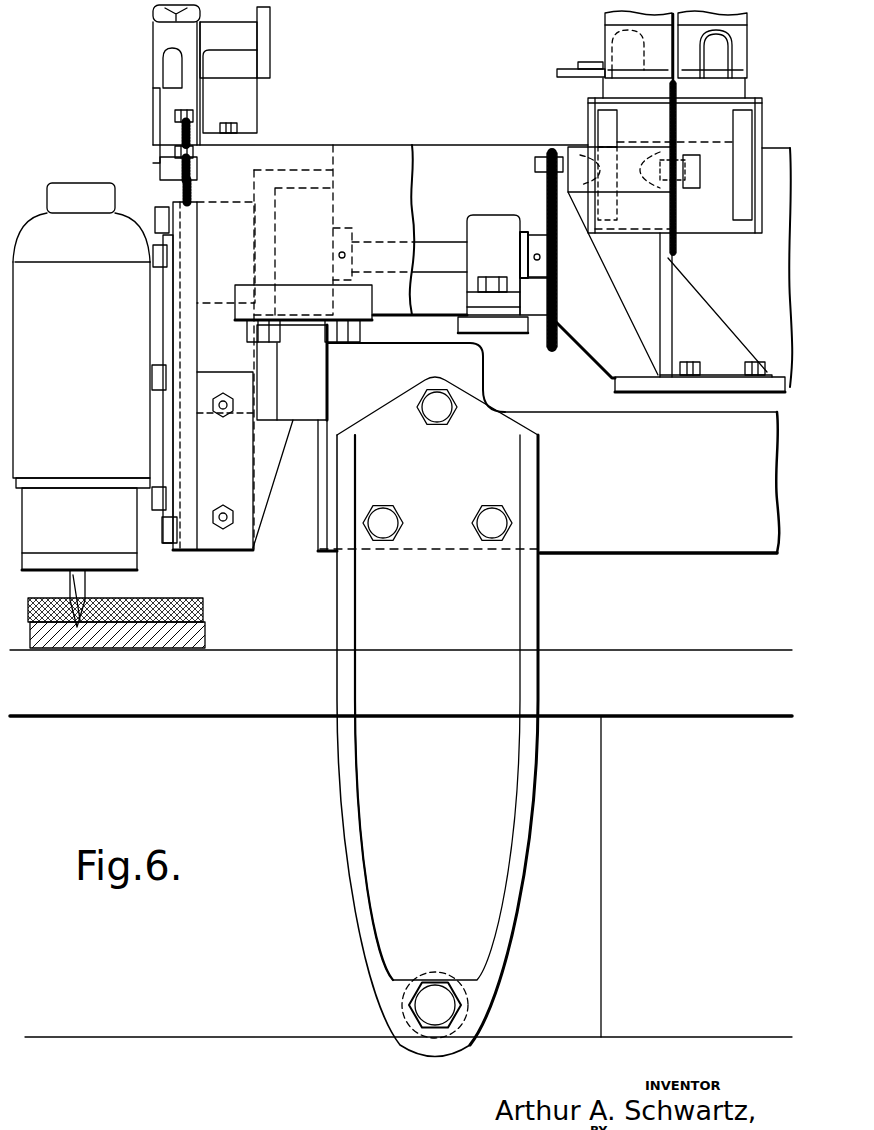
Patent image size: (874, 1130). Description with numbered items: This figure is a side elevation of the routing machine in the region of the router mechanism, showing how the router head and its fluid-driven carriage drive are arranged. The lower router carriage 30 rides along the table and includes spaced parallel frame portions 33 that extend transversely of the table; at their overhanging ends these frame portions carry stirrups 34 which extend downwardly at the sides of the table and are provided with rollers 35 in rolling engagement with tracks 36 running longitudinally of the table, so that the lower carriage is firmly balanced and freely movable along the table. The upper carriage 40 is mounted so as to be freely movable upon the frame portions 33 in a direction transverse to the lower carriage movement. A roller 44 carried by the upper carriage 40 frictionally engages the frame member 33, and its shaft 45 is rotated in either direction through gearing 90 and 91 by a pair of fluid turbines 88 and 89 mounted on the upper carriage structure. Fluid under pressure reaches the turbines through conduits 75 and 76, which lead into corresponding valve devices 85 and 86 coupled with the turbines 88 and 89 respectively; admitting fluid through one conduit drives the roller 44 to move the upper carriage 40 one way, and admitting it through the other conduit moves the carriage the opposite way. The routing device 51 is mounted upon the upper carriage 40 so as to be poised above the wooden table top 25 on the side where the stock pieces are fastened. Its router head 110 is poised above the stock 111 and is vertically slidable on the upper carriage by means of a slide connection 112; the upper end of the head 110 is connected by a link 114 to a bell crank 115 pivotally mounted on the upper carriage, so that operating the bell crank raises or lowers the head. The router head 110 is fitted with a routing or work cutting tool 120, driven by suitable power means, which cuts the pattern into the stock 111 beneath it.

The wooden table top 25 is at (247, 697).
The lower router carriage 30 is at (549, 482).
The frame portions 33 is at (308, 378).
The stirrups 34 is at (375, 765).
The rollers 35 is at (402, 1010).
The tracks 36 is at (283, 1037).
The upper carriage 40 is at (442, 152).
The roller 44 is at (312, 222).
The shaft 45 is at (438, 255).
The routing device 51 is at (89, 176).
The conduit 75 is at (557, 72).
The conduit 76 is at (580, 63).
The valve device 85 is at (733, 48).
The valve device 86 is at (620, 45).
The fluid turbine 88 is at (745, 120).
The fluid turbine 89 is at (606, 122).
The gearing 90 is at (679, 247).
The gearing 91 is at (557, 257).
The router head 110 is at (81, 350).
The stock 111 is at (202, 610).
The slide connection 112 is at (170, 297).
The link 114 is at (153, 122).
The bell crank 115 is at (262, 42).
The routing tool 120 is at (80, 600).